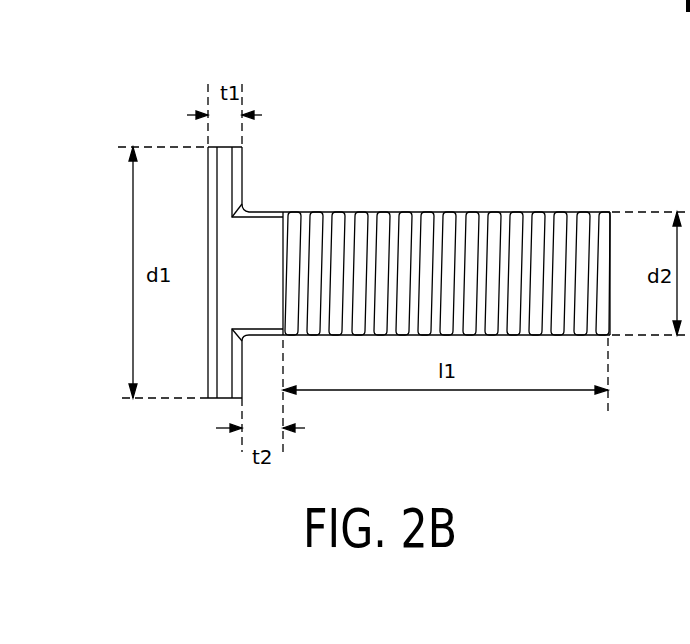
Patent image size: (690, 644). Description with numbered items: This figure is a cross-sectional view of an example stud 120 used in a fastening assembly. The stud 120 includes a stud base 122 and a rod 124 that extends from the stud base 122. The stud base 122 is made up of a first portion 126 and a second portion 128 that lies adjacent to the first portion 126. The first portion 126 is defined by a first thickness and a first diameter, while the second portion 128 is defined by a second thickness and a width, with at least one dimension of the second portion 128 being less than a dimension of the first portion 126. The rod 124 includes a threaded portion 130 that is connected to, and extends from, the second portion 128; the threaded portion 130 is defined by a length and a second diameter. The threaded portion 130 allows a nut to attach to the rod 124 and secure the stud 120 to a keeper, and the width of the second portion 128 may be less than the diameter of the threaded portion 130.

The stud 120 is at (120, 45).
The stud base 122 is at (286, 143).
The rod 124 is at (470, 148).
The first portion 126 is at (224, 378).
The second portion 128 is at (252, 228).
The threaded portion 130 is at (522, 214).